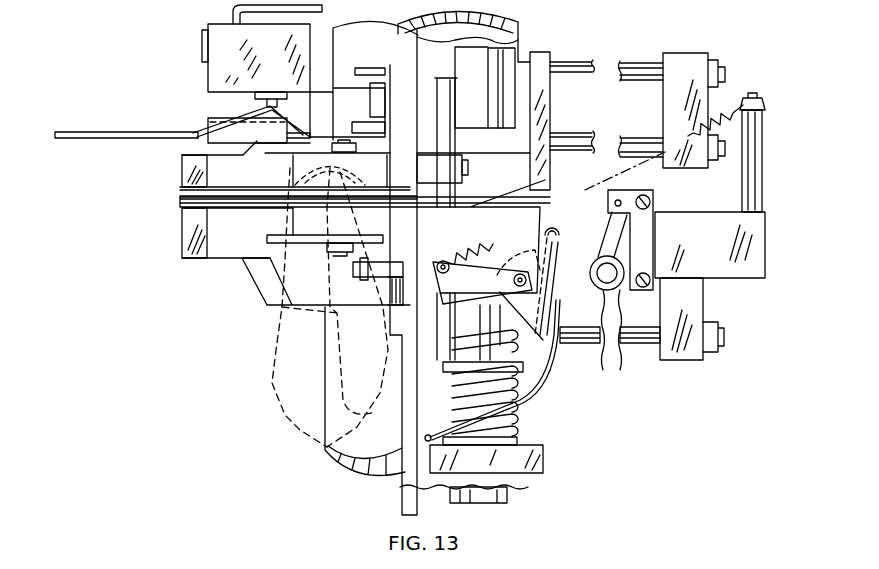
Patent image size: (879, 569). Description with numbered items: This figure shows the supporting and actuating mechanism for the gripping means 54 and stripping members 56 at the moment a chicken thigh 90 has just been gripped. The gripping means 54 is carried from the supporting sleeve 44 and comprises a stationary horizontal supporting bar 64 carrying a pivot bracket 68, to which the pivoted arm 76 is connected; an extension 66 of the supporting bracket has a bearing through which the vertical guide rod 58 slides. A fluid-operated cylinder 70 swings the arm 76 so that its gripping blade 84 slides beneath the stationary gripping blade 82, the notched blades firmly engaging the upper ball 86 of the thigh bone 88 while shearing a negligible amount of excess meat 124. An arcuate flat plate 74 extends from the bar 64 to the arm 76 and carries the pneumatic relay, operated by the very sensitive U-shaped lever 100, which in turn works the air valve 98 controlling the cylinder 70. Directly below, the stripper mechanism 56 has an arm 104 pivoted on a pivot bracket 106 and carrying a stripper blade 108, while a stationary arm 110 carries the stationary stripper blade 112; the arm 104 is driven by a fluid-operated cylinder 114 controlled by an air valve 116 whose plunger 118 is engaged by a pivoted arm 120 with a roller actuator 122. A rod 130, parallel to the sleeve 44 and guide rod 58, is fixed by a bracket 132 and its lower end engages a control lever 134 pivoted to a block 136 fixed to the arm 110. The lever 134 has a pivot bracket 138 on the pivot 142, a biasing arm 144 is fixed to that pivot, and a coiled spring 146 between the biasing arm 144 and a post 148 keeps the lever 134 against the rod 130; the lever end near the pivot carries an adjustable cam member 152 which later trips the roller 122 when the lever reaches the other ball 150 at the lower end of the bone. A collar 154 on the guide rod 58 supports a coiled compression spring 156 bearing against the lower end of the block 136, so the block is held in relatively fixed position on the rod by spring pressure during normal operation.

The supporting sleeve 44 is at (523, 37).
The gripping means 54 is at (176, 186).
The stripping members 56 is at (176, 225).
The vertical guide rod 58 is at (520, 75).
The horizontal supporting bar 64 is at (403, 95).
The extension 66 is at (519, 160).
The pivot bracket 68 is at (362, 82).
The fluid-operated cylinder 70 is at (642, 90).
The arcuate flat plate 74 is at (118, 132).
The pivoted arm 76 is at (185, 160).
The gripping blade 82 is at (396, 185).
The gripping blade 84 is at (225, 187).
The upper ball 86 is at (348, 186).
The thigh bone 88 is at (284, 315).
The thigh 90 is at (270, 402).
The air valve 98 is at (215, 80).
The lever 100 is at (212, 138).
The arm 104 is at (228, 248).
The pivot bracket 106 is at (367, 320).
The stripper blade 108 is at (218, 205).
The stationary arm 110 is at (407, 240).
The stationary stripper blade 112 is at (383, 207).
The fluid-operated cylinder 114 is at (585, 318).
The air valve 116 is at (727, 263).
The plunger 118 is at (630, 243).
The pivoted arm 120 is at (612, 244).
The roller actuator 122 is at (623, 334).
The excess meat 124 is at (296, 182).
The rod 130 is at (446, 100).
The bracket 132 is at (463, 177).
The control lever 134 is at (532, 386).
The block 136 is at (523, 213).
The pivot bracket 138 is at (593, 273).
The pivot 142 is at (501, 275).
The biasing arm 144 is at (463, 291).
The coiled spring 146 is at (723, 110).
The post 148 is at (763, 153).
The other ball 150 is at (312, 425).
The cam member 152 is at (549, 229).
The collar 154 is at (544, 456).
The coiled compression spring 156 is at (520, 427).